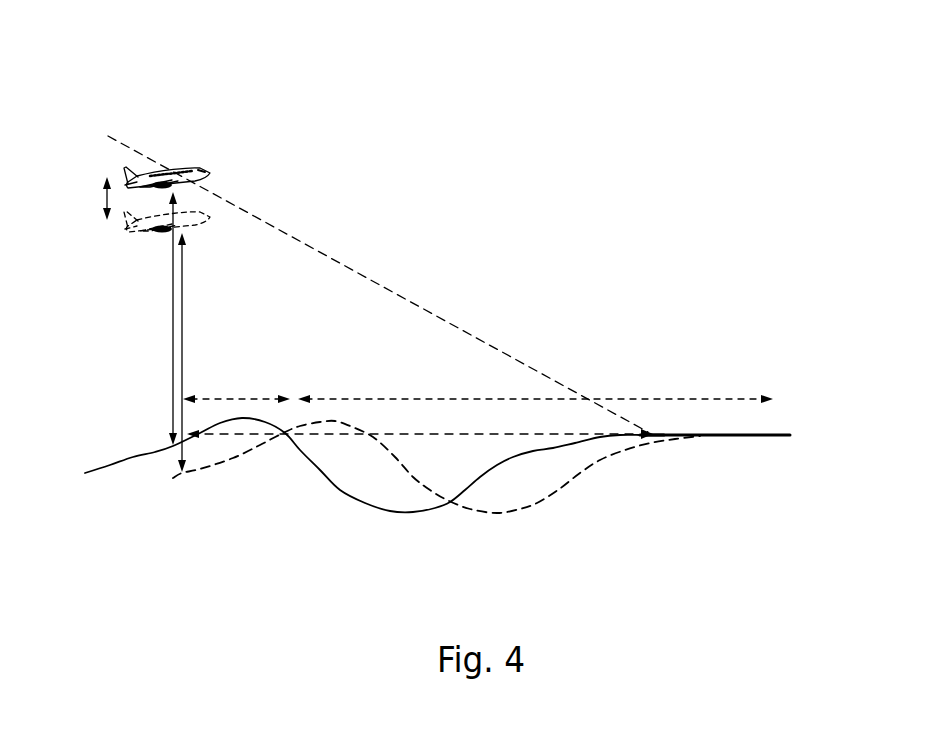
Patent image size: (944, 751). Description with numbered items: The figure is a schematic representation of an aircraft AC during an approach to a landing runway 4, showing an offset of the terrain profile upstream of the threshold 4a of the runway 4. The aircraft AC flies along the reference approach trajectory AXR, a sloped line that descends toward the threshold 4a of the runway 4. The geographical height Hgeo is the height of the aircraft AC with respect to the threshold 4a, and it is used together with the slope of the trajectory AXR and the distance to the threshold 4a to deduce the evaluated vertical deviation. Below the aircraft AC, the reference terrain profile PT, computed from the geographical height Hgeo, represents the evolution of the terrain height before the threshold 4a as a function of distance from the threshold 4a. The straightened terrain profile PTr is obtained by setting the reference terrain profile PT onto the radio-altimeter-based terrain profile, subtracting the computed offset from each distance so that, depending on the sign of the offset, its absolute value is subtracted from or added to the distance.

The reference approach trajectory AXR is at (135, 148).
The aircraft AC is at (200, 167).
The geographical height Hgeo is at (172, 318).
The threshold 4a is at (656, 420).
The runway 4 is at (782, 432).
The straightened terrain profile PTr is at (337, 488).
The reference terrain profile PT is at (535, 505).